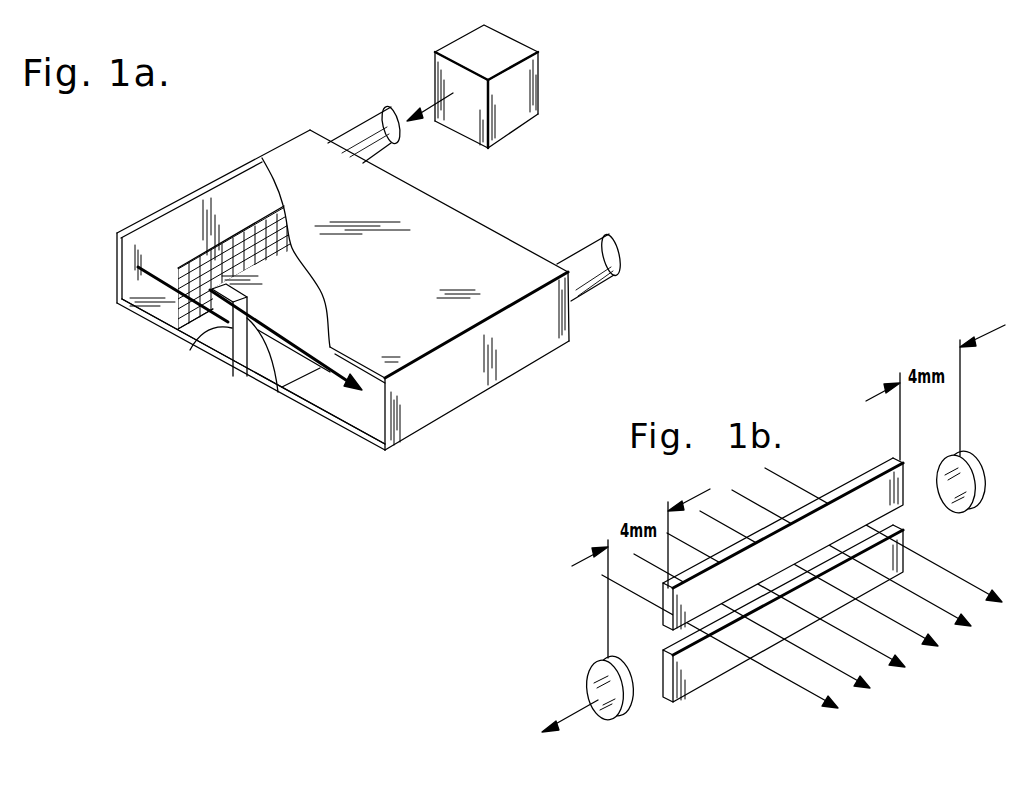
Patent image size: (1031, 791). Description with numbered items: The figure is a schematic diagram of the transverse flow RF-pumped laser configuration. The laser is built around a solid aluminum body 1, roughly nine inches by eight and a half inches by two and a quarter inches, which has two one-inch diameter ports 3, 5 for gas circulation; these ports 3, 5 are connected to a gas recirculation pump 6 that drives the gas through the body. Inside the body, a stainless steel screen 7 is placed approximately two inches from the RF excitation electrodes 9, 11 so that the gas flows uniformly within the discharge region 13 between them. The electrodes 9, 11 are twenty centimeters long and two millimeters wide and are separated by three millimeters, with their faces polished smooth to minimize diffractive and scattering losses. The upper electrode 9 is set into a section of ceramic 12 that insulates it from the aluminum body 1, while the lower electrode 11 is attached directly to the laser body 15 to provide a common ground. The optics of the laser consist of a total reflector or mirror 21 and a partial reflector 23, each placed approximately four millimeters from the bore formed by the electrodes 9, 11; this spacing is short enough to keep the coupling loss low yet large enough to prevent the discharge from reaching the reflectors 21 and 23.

In FIG. 1A, the solid aluminum body 1 is at (446, 416).
In FIG. 1A, the port 3 is at (596, 243).
In FIG. 1A, the port 5 is at (372, 113).
In FIG. 1A, the gas recirculation pump 6 is at (528, 48).
In FIG. 1A, the stainless steel screen 7 is at (205, 265).
In FIG. 1A, the upper electrode 9 is at (254, 334).
In FIG. 1B, the upper electrode 9 is at (880, 470).
In FIG. 1A, the lower electrode 11 is at (236, 356).
In FIG. 1B, the lower electrode 11 is at (692, 684).
In FIG. 1A, the section of ceramic 12 is at (232, 305).
In FIG. 1A, the discharge region 13 is at (226, 324).
In FIG. 1A, the laser body 15 is at (338, 424).
In FIG. 1B, the total reflector or mirror 21 is at (960, 511).
In FIG. 1B, the partial reflector 23 is at (617, 712).